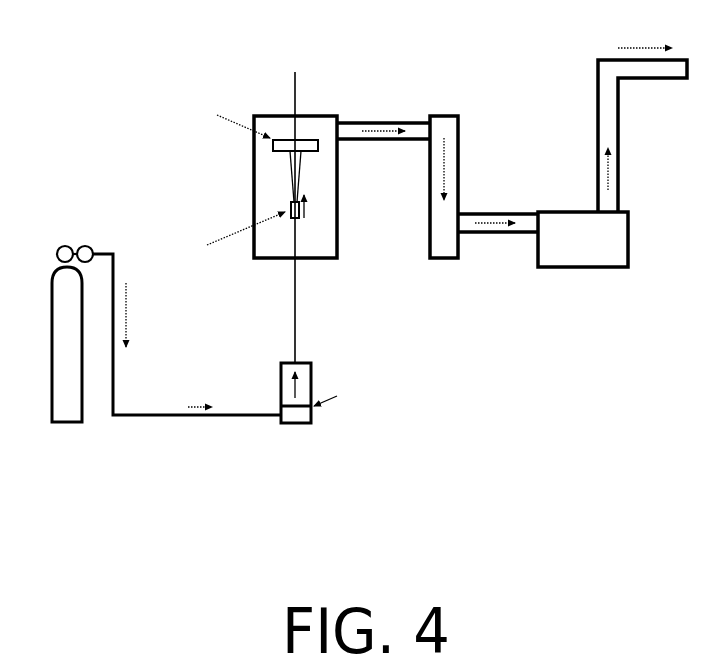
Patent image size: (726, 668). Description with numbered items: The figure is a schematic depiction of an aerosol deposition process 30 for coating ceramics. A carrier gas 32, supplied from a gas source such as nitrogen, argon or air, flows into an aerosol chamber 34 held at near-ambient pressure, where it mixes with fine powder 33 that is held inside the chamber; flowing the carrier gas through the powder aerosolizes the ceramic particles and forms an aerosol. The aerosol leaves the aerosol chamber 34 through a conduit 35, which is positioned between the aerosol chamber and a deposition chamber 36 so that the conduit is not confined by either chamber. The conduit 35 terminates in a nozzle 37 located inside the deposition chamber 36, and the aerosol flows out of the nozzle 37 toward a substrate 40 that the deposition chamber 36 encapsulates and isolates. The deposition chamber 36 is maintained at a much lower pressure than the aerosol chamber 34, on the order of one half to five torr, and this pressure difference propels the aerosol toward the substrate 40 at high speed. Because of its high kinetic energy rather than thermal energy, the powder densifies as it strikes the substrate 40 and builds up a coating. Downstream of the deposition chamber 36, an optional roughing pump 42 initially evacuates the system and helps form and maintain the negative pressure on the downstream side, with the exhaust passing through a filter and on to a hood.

The aerosol deposition process 30 is at (553, 423).
The carrier gas 32 is at (58, 285).
The fine powder 33 is at (382, 407).
The aerosol chamber 34 is at (281, 385).
The conduit 35 is at (295, 306).
The deposition chamber 36 is at (327, 239).
The nozzle 37 is at (300, 209).
The substrate 40 is at (288, 142).
The roughing pump 42 is at (592, 249).